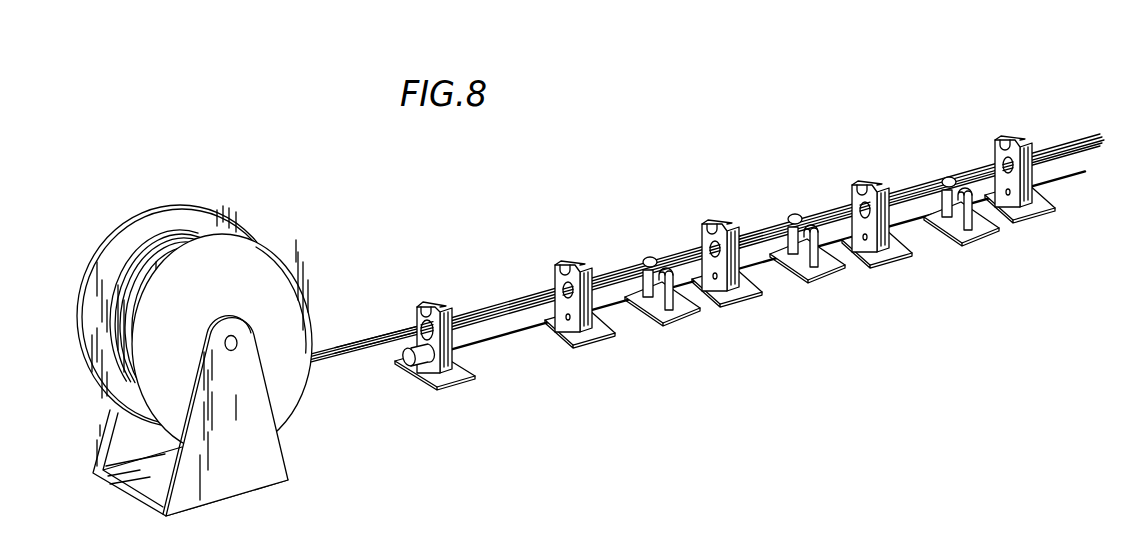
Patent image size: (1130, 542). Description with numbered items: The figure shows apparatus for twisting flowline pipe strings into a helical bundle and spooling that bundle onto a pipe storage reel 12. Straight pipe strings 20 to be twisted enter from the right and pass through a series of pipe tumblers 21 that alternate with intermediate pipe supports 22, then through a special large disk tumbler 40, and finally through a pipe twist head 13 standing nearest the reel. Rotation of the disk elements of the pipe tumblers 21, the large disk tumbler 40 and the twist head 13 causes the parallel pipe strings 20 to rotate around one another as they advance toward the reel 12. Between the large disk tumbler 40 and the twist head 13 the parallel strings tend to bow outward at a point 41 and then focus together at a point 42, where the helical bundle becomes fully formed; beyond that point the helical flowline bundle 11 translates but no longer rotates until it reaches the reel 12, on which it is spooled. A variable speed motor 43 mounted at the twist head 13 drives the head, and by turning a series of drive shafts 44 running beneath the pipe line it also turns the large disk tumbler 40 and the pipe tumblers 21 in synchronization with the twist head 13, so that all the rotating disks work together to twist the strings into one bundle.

The helical flowline bundle 11 is at (323, 363).
The reel 12 is at (163, 205).
The pipe twist head 13 is at (427, 303).
The straight pipe strings 20 is at (770, 227).
The pipe tumblers 21 is at (712, 222).
The intermediate pipe supports 22 is at (652, 253).
The large disk tumbler 40 is at (565, 260).
The bow-out point 41 is at (470, 307).
The focus point 42 is at (347, 343).
The variable speed motor 43 is at (418, 367).
The drive shafts 44 is at (513, 333).